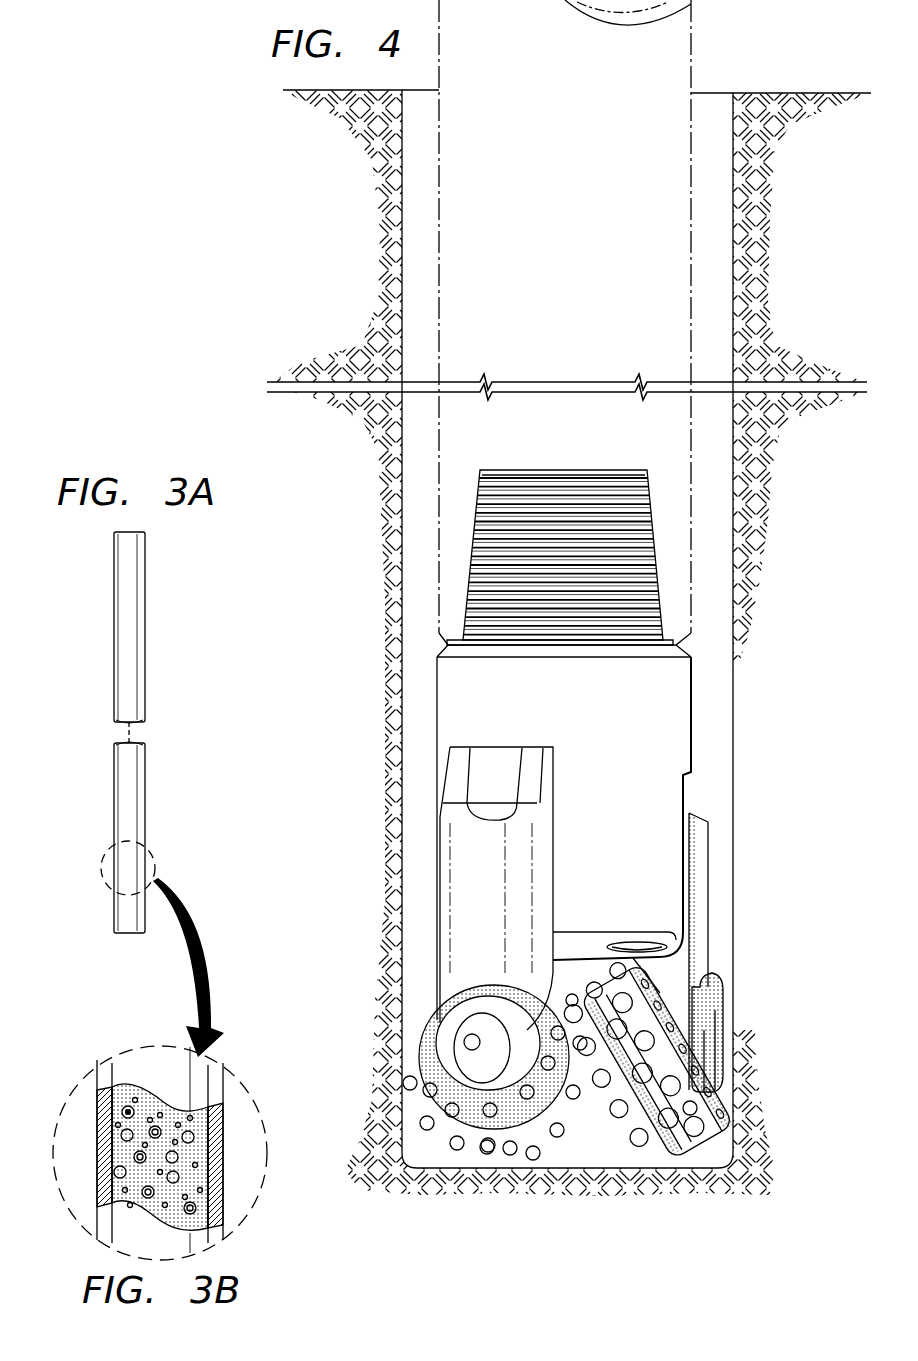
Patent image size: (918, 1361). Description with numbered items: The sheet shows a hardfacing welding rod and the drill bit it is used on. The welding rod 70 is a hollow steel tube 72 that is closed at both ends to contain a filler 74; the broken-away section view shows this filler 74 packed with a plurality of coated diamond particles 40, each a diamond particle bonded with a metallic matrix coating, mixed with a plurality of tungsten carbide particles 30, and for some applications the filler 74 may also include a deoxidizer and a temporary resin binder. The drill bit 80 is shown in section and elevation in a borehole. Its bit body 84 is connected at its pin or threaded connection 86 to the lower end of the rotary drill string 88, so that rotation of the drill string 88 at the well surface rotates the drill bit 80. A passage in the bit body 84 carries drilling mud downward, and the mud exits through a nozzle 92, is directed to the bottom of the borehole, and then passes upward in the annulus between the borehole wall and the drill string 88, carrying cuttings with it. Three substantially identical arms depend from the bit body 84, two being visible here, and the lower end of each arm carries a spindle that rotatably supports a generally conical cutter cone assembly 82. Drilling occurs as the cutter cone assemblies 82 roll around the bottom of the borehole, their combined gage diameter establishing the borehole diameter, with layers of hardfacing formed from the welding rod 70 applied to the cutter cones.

In FIG. 3B, the tungsten carbide particles 30 is at (207, 1128).
In FIG. 3B, the coated diamond particles 40 is at (113, 1133).
In FIG. 3A, the welding rod 70 is at (171, 794).
In FIG. 3B, the welding rod 70 is at (162, 1150).
In FIG. 3A, the hollow steel tube 72 is at (145, 670).
In FIG. 3B, the hollow steel tube 72 is at (213, 1163).
In FIG. 3B, the filler 74 is at (143, 1112).
In FIG. 4, the drill bit 80 is at (577, 827).
In FIG. 4, the cutter cone assembly 82 is at (488, 1150).
In FIG. 4, the bit body 84 is at (668, 755).
In FIG. 4, the threaded connection 86 is at (650, 507).
In FIG. 4, the rotary drill string 88 is at (691, 121).
In FIG. 4, the nozzle 92 is at (660, 942).